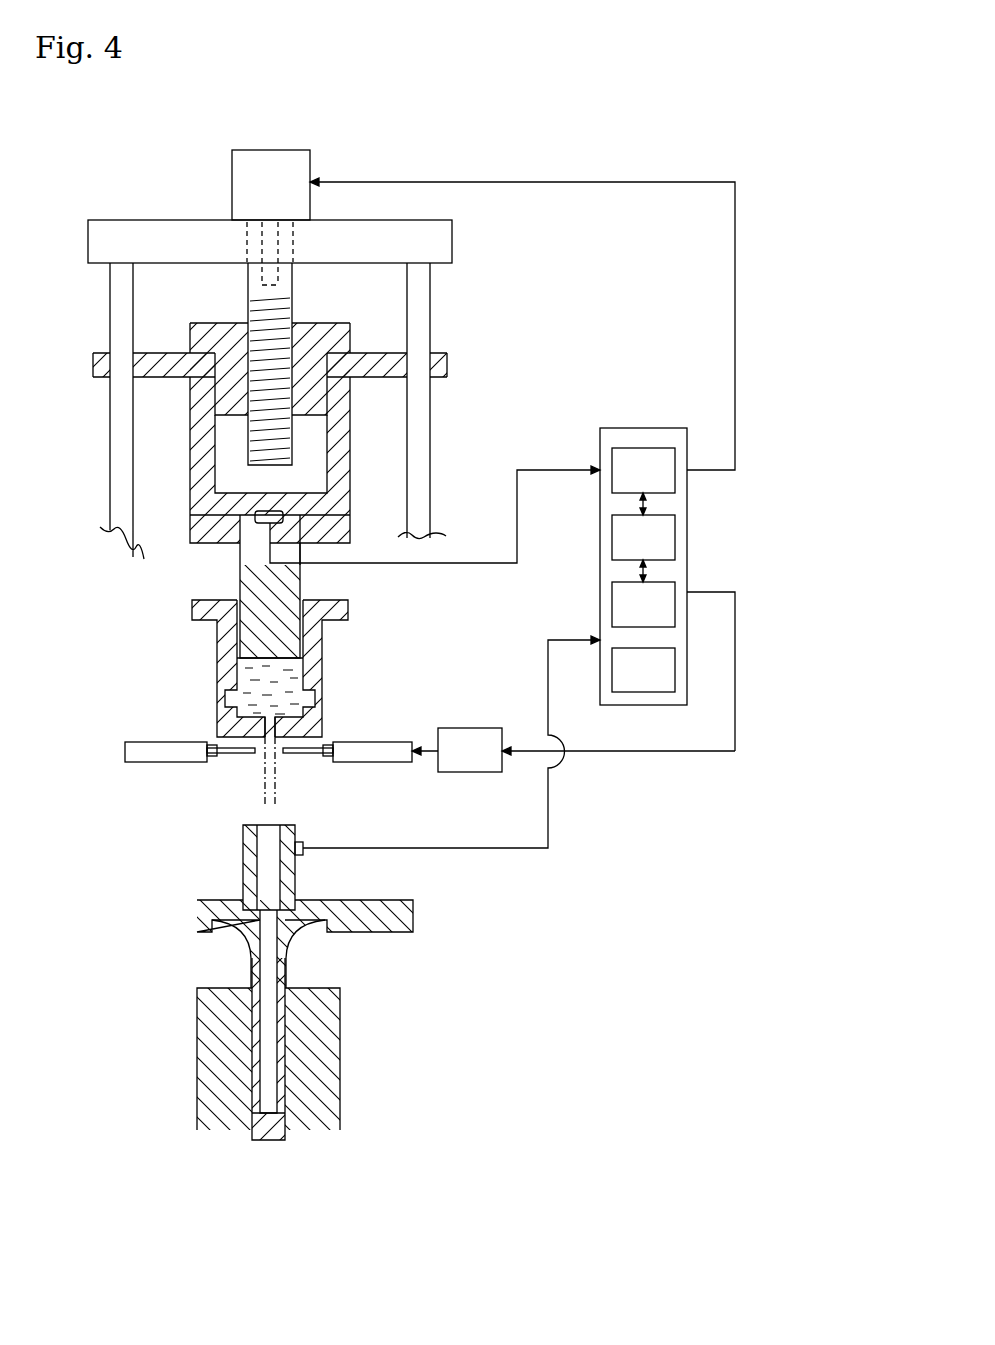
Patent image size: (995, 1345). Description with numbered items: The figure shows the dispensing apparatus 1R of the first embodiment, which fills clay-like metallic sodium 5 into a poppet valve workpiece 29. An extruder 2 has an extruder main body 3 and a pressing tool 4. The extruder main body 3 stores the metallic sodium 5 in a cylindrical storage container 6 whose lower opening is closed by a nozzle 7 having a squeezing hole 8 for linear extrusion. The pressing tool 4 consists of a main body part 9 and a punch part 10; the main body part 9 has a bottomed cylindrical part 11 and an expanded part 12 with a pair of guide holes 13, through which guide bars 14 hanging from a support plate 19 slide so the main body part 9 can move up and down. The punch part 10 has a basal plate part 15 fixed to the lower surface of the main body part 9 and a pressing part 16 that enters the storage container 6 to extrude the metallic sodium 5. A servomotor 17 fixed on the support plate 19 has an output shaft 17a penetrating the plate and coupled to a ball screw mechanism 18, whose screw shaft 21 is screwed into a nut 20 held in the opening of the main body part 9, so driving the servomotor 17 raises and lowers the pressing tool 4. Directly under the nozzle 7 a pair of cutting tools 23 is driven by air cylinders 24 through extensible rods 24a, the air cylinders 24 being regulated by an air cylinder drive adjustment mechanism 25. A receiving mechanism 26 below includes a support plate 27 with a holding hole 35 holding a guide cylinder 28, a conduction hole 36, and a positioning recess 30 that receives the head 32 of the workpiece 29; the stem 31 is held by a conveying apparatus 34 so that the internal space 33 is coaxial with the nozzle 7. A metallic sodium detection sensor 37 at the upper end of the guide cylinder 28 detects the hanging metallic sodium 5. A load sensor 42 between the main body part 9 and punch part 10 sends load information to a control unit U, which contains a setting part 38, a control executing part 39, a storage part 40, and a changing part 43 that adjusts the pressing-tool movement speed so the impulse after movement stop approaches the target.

The dispensing apparatus 1R is at (452, 130).
The extruder 2 is at (308, 388).
The extruder main body 3 is at (306, 668).
The pressing tool 4 is at (324, 490).
The metallic sodium 5 is at (237, 665).
The storage container 6 is at (318, 660).
The nozzle 7 is at (312, 715).
The squeezing hole 8 is at (252, 727).
The main body part 9 is at (307, 419).
The punch part 10 is at (362, 539).
The cylindrical part 11 is at (340, 428).
The expanded part 12 is at (447, 368).
The guide holes 13 is at (120, 357).
The guide bars 14 is at (110, 290).
The basal plate part 15 is at (287, 555).
The pressing part 16 is at (342, 530).
The servomotor 17 is at (277, 155).
The output shaft 17a is at (262, 277).
The ball screw mechanism 18 is at (301, 363).
The support plate 19 is at (105, 232).
The nut 20 is at (305, 325).
The screw shaft 21 is at (293, 285).
The cutting tool 23 is at (237, 757).
The air cylinder 24 is at (140, 757).
The extensible rod 24a is at (210, 760).
The air cylinder drive adjustment mechanism 25 is at (463, 737).
The receiving mechanism 26 is at (342, 954).
The support plate 27 is at (378, 935).
The guide cylinder 28 is at (340, 925).
The poppet valve workpiece 29 is at (191, 1025).
The positioning recess 30 is at (318, 933).
The stem 31 is at (250, 1025).
The head 32 is at (212, 932).
The internal space 33 is at (270, 1105).
The conveying apparatus 34 is at (205, 1085).
The holding hole 35 is at (200, 910).
The conduction hole 36 is at (267, 910).
The metallic sodium detection sensor 37 is at (303, 857).
The setting part 38 is at (617, 532).
The control executing part 39 is at (620, 603).
The storage part 40 is at (668, 670).
The load sensor 42 is at (258, 523).
The changing part 43 is at (632, 458).
The control unit U is at (522, 464).